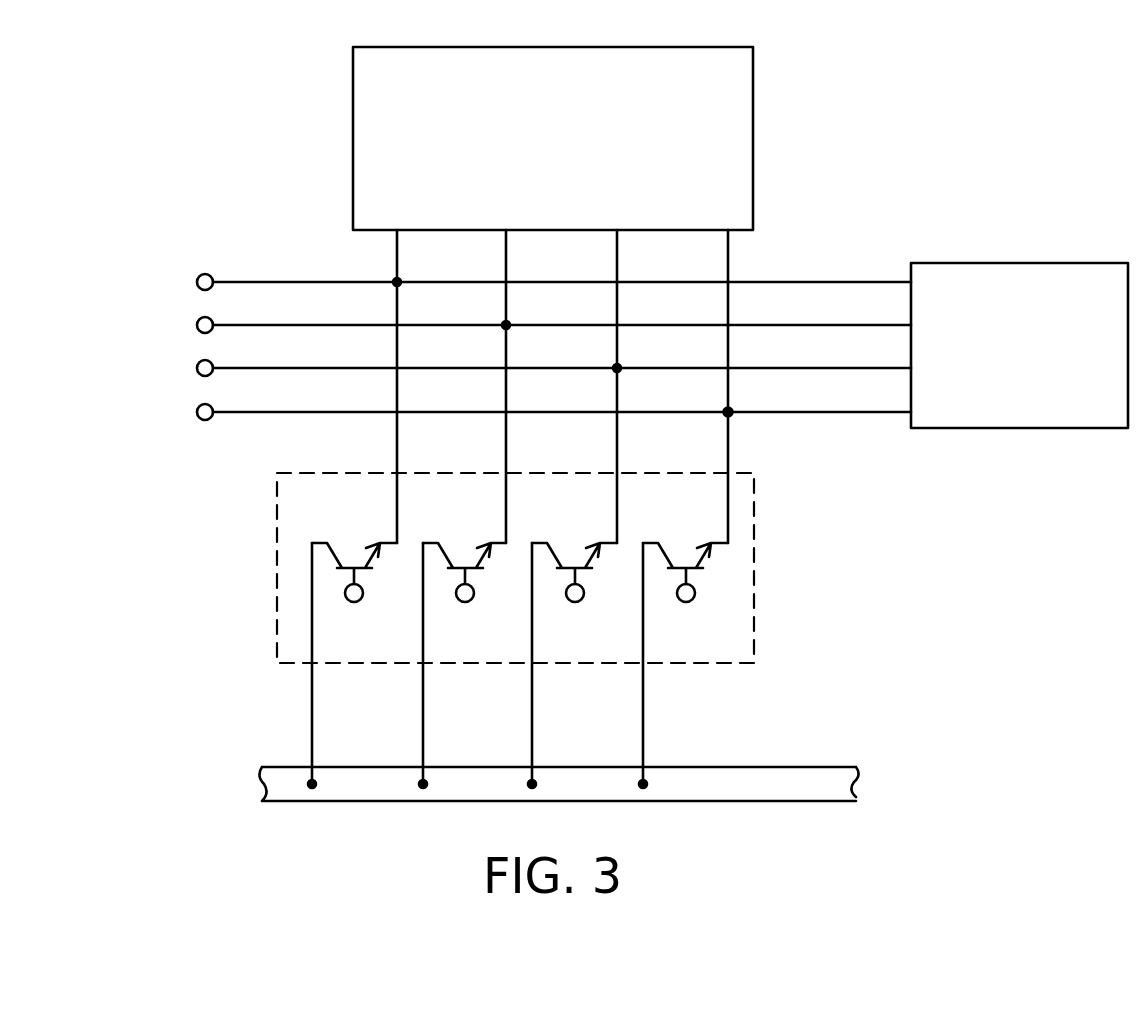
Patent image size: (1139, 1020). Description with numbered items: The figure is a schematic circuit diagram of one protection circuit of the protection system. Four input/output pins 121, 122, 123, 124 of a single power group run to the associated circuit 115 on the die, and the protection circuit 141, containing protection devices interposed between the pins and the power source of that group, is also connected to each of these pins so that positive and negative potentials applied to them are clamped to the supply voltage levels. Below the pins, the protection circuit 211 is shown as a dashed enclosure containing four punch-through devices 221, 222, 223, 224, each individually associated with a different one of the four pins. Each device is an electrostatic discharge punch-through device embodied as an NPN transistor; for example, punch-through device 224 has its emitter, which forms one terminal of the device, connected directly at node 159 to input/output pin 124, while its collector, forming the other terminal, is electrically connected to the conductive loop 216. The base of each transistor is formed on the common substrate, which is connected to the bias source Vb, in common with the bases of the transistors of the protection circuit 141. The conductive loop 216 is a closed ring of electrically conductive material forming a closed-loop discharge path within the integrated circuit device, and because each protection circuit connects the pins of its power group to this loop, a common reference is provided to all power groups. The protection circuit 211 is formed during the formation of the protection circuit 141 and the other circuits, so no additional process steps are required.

The protection circuit 141 is at (353, 112).
The circuit 115 is at (1015, 262).
The input/output pin 121 is at (197, 282).
The input/output pin 122 is at (197, 325).
The input/output pin 123 is at (197, 368).
The input/output pin 124 is at (197, 412).
The node 159 is at (731, 415).
The protection circuit 211 is at (276, 530).
The punch-through device 221 is at (347, 548).
The punch-through device 222 is at (458, 548).
The punch-through device 223 is at (567, 548).
The punch-through device 224 is at (678, 548).
The conductive loop 216 is at (831, 765).